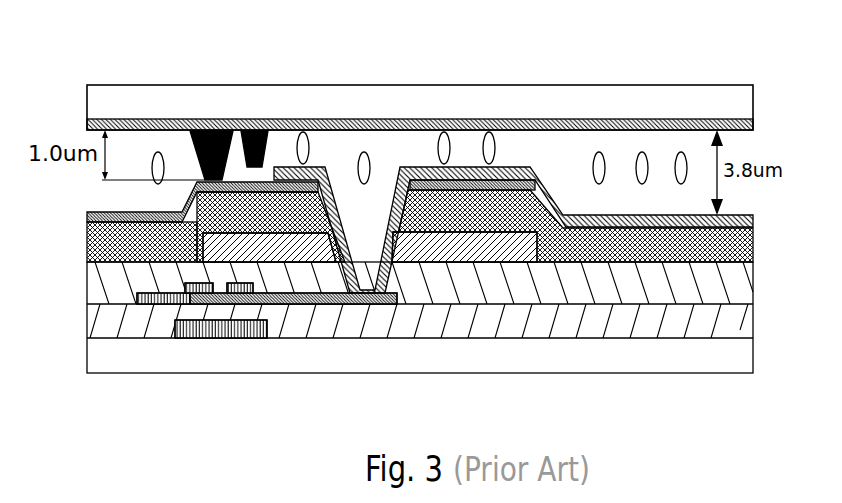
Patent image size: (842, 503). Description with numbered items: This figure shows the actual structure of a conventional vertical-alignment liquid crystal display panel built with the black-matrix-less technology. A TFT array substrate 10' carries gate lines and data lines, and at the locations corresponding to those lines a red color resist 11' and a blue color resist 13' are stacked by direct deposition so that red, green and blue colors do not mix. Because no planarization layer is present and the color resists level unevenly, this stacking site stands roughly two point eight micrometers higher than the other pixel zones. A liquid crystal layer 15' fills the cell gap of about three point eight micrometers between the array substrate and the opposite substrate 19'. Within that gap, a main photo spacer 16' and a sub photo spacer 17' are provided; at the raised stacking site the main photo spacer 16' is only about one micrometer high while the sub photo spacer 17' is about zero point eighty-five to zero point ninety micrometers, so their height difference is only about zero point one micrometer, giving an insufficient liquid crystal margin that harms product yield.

The TFT array substrate 10' is at (389, 317).
The red color resist 11' is at (387, 229).
The blue color resist 13' is at (279, 201).
The liquid crystal layer 15' is at (419, 99).
The main photo spacer 16' is at (210, 97).
The sub photo spacer 17' is at (264, 90).
The opposite substrate 19' is at (445, 107).